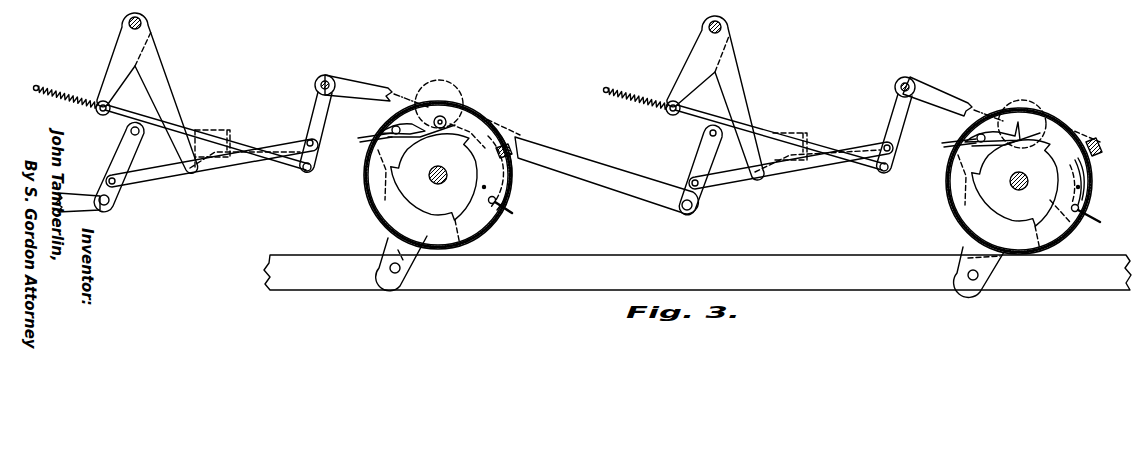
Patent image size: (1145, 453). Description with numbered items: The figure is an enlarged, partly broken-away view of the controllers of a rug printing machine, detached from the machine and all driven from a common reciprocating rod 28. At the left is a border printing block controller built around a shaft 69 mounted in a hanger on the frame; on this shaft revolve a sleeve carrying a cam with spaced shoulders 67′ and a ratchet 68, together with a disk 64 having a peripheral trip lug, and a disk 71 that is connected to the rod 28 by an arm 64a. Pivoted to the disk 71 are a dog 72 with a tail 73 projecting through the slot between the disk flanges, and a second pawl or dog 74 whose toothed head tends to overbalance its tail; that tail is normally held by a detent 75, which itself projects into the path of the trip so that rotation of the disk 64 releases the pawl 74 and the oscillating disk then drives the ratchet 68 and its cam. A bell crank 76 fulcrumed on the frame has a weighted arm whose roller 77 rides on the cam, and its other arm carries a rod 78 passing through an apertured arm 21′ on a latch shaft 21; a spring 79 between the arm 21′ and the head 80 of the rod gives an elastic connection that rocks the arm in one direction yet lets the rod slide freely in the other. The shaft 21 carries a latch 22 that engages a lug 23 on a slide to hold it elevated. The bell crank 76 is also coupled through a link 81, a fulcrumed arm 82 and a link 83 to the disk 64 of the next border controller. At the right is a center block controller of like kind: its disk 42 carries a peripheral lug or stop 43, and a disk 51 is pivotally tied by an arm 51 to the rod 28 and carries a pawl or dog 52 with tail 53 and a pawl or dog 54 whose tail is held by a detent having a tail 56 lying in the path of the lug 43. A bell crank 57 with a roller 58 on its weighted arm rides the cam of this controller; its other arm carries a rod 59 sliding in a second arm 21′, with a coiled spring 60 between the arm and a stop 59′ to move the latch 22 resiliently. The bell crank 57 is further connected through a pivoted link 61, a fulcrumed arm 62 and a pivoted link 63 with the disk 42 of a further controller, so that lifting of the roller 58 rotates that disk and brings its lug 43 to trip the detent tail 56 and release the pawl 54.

The shaft 21 is at (150, 22).
The arm 21′ is at (109, 75).
The latch 22 is at (192, 172).
The lug 23 is at (231, 131).
The rod 28 is at (566, 288).
The disk 42 is at (960, 228).
The peripheral lug or stop 43 is at (1097, 146).
The arm 51 is at (1000, 262).
The pawl or dog 52 is at (972, 130).
The tail 53 is at (944, 147).
The pawl or dog 54 is at (1090, 177).
The tail 56 is at (1102, 217).
The bell crank 57 is at (948, 97).
The roller 58 is at (1034, 118).
The rod 59 is at (760, 130).
The stop 59′ is at (604, 91).
The coiled spring 60 is at (632, 107).
The pivoted link 61 is at (872, 168).
The fulcrumed arm 62 is at (690, 165).
The pivoted link 63 is at (630, 190).
The disk 64 is at (390, 229).
The arm 64a is at (410, 268).
The shoulders 67′ is at (440, 105).
The ratchet 68 is at (490, 142).
The shaft 69 is at (435, 183).
The disk 71 is at (365, 200).
The dog 72 is at (392, 125).
The tail 73 is at (366, 140).
The pawl or dog 74 is at (513, 165).
The detent 75 is at (500, 200).
The bell crank 76 is at (374, 95).
The roller 77 is at (462, 104).
The rod 78 is at (193, 128).
The spring 79 is at (85, 106).
The head 80 is at (36, 74).
The link 81 is at (252, 158).
The fulcrumed arm 82 is at (121, 160).
The link 83 is at (88, 210).